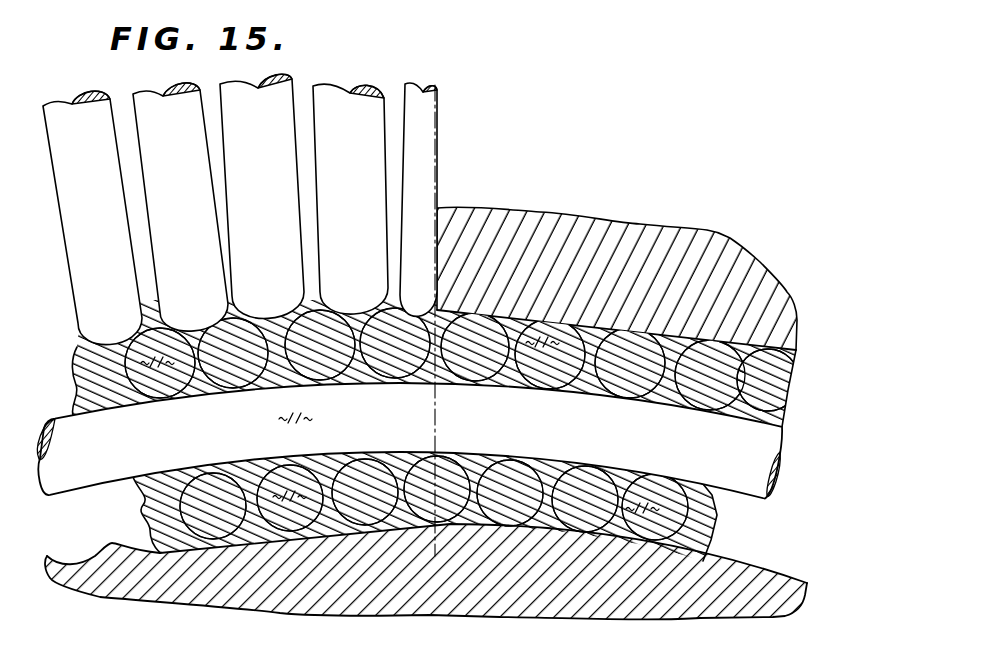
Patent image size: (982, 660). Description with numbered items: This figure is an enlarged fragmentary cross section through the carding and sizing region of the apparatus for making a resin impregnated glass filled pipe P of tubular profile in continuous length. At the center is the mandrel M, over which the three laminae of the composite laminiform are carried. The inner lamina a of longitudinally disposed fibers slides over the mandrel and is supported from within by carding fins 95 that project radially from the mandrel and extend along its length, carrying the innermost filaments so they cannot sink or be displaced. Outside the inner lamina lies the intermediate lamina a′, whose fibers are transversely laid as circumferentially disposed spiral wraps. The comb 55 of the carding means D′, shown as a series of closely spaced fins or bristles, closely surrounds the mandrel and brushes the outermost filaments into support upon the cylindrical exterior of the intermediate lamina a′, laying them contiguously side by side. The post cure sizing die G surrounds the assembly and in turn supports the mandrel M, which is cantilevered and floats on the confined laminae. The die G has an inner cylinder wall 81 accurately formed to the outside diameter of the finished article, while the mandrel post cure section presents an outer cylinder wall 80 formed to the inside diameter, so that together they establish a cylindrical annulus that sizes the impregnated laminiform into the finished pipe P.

The comb 55 is at (120, 257).
The carding means D′ is at (222, 202).
The post cure sizing die G is at (717, 228).
The inner cylinder wall 81 is at (797, 324).
The intermediate lamina a′ is at (546, 426).
The inner lamina a is at (128, 524).
The pipe P is at (443, 437).
The outer cylinder wall 80 is at (745, 569).
The fins 95 is at (113, 543).
The mandrel M is at (426, 572).